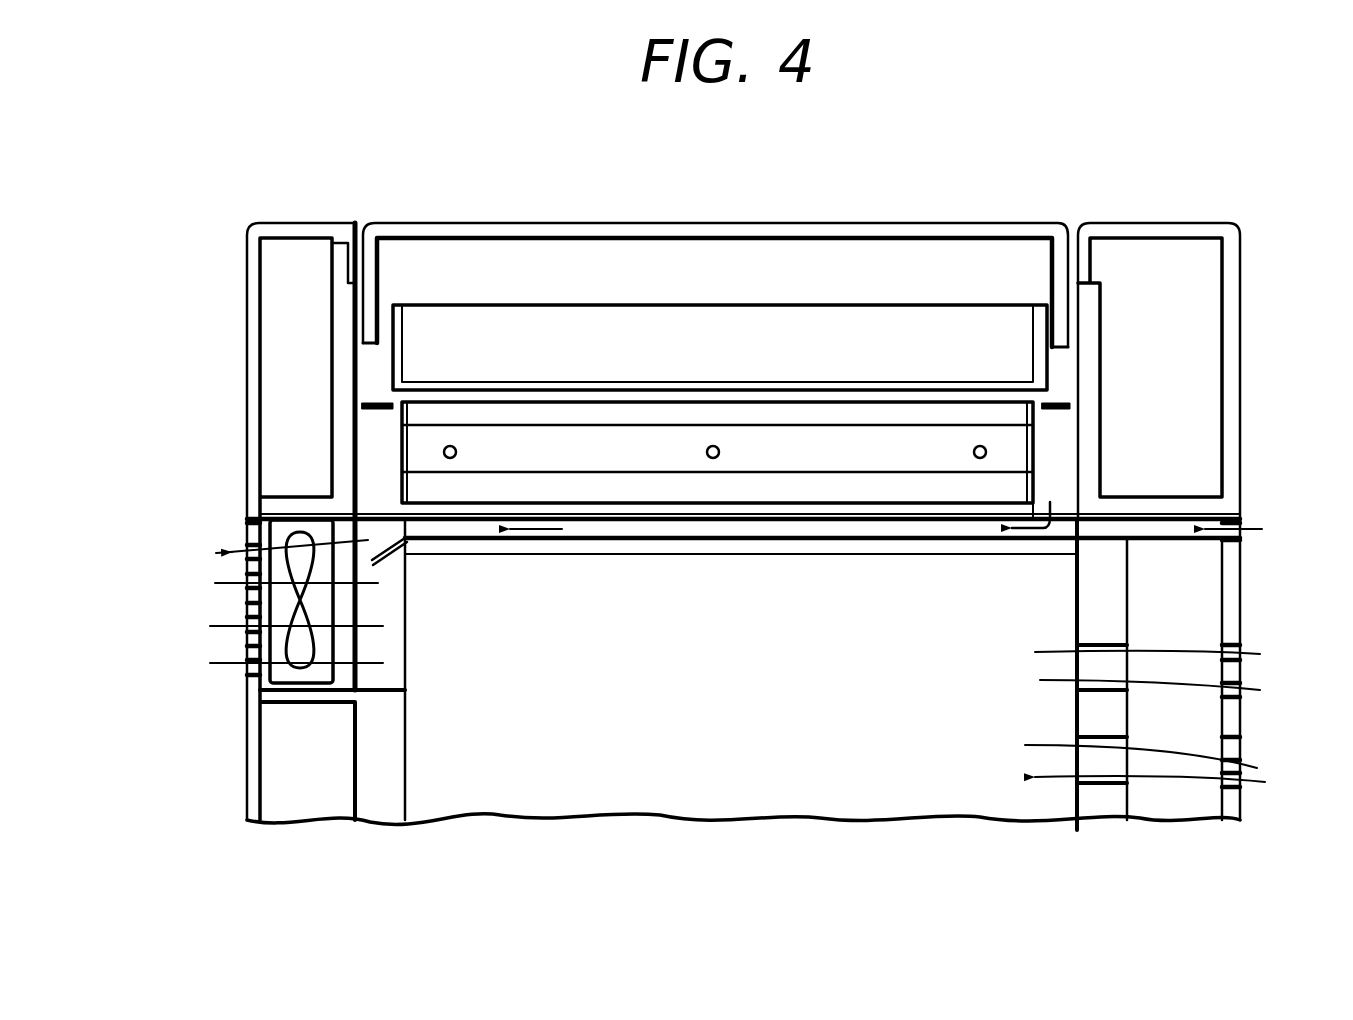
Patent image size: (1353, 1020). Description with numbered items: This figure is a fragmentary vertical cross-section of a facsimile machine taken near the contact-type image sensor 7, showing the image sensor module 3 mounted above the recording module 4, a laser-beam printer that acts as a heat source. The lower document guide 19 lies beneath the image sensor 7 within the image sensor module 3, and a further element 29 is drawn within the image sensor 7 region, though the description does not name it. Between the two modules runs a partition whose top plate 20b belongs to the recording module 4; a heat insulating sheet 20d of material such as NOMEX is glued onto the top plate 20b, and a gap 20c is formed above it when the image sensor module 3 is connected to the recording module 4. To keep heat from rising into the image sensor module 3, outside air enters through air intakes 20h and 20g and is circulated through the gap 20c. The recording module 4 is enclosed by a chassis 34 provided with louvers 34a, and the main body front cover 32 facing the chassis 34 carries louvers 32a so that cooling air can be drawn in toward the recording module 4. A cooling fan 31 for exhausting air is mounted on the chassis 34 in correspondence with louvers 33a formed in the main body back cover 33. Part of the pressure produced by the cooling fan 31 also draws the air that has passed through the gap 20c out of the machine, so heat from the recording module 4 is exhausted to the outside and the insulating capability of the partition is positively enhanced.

The image sensor module 3 is at (590, 265).
The recording module 4 is at (702, 832).
The contact-type image sensor 7 is at (633, 447).
The lower document guide 19 is at (1056, 402).
The top plate 20b is at (385, 558).
The gap 20c is at (620, 540).
The heat insulating sheet 20d is at (735, 556).
The air intake 20g is at (1240, 521).
The air intake 20h is at (1060, 519).
The head holder 29 is at (822, 503).
The cooling fan 31 is at (285, 674).
The main body front cover 32 is at (1240, 592).
The louvers 32a is at (1240, 648).
The main body back cover 33 is at (247, 452).
The louvers 33a is at (250, 547).
The recording module chassis 34 is at (1107, 812).
The louvers 34a is at (1077, 785).